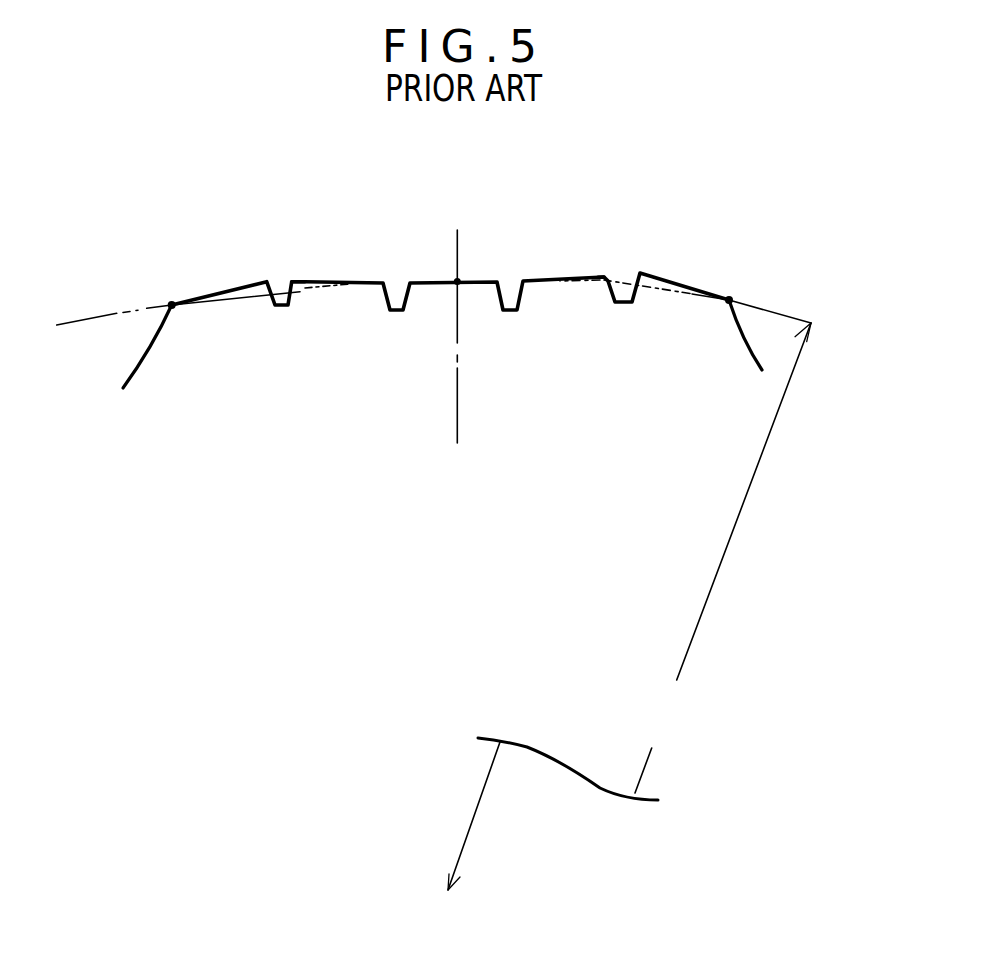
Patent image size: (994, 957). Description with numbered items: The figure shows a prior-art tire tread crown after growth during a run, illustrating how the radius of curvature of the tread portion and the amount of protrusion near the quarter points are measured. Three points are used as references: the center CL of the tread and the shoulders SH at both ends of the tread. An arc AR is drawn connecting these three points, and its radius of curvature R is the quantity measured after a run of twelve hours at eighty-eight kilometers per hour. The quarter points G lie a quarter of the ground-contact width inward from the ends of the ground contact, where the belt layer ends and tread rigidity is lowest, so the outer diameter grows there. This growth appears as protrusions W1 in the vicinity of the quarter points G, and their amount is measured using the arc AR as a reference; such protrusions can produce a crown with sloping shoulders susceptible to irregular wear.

The shoulders SH is at (442, 321).
The protrusions W1 is at (301, 292).
The quarter points G is at (305, 282).
The center of the tread CL is at (458, 314).
The arc AR is at (777, 298).
The radius of curvature R is at (629, 606).